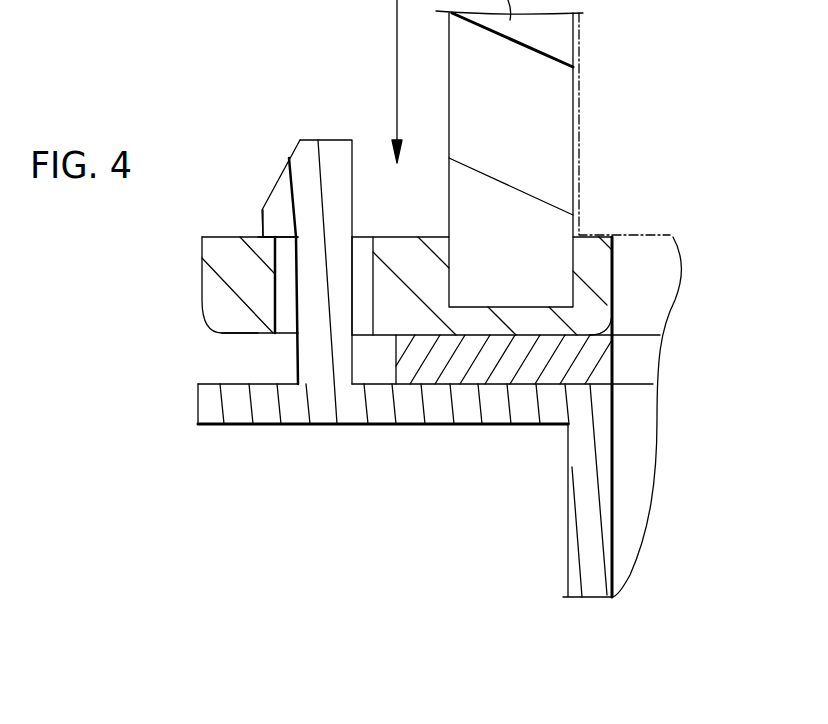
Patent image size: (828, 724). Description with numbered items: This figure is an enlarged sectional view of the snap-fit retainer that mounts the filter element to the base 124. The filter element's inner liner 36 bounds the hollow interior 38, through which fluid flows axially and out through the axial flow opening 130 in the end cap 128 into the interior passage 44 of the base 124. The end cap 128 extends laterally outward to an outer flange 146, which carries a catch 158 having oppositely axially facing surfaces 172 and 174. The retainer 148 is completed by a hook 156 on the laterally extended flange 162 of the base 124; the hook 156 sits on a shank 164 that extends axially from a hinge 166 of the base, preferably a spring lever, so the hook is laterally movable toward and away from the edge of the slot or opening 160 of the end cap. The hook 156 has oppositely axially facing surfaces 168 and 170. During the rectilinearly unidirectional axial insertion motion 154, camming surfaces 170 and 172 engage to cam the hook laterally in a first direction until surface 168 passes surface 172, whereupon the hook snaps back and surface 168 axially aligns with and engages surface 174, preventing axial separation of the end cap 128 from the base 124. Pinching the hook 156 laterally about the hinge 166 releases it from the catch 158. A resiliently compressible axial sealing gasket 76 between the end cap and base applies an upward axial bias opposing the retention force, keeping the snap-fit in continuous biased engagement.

The inner liner 36 is at (578, 48).
The hollow interior 38 is at (680, 103).
The interior passage 44 is at (643, 466).
The axial sealing gasket 76 is at (602, 371).
The base 124 is at (566, 550).
The end cap 128 is at (396, 237).
The axial flow opening 130 is at (615, 280).
The outer flange 146 is at (202, 303).
The retainer 148 is at (266, 235).
The axial insertion motion 154 is at (395, 70).
The hook 156 is at (266, 236).
The catch 158 is at (267, 250).
The slot or opening 160 is at (278, 311).
The laterally extended flange 162 is at (210, 404).
The shank 164 is at (340, 278).
The hinge 166 is at (320, 402).
The axially facing surface of hook 168 is at (262, 237).
The camming surface of hook 170 is at (260, 236).
The camming surface of catch 172 is at (257, 333).
The axially facing surface of catch 174 is at (266, 242).